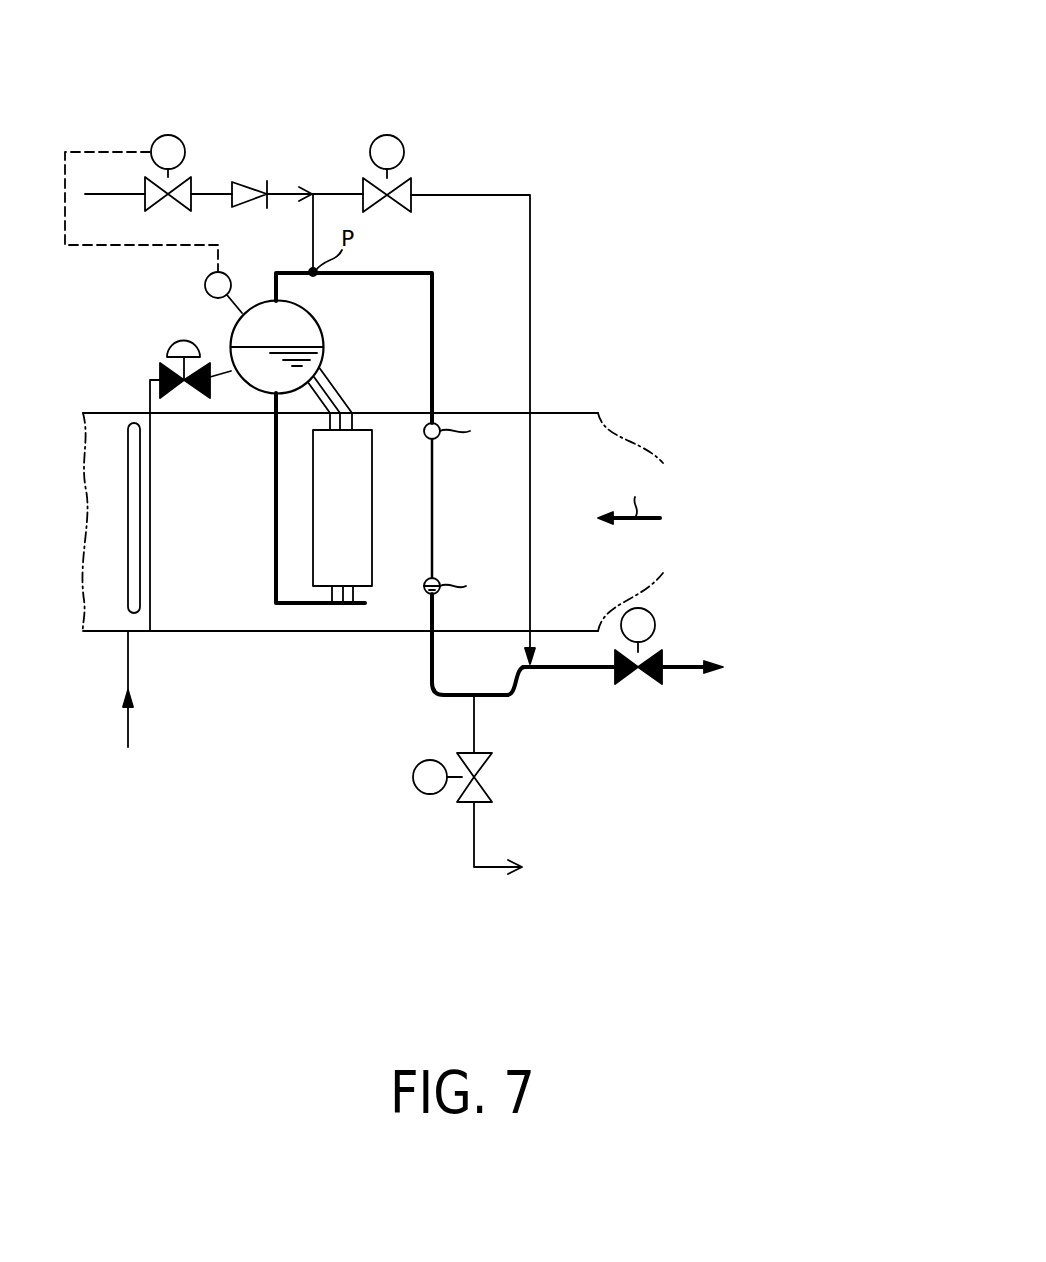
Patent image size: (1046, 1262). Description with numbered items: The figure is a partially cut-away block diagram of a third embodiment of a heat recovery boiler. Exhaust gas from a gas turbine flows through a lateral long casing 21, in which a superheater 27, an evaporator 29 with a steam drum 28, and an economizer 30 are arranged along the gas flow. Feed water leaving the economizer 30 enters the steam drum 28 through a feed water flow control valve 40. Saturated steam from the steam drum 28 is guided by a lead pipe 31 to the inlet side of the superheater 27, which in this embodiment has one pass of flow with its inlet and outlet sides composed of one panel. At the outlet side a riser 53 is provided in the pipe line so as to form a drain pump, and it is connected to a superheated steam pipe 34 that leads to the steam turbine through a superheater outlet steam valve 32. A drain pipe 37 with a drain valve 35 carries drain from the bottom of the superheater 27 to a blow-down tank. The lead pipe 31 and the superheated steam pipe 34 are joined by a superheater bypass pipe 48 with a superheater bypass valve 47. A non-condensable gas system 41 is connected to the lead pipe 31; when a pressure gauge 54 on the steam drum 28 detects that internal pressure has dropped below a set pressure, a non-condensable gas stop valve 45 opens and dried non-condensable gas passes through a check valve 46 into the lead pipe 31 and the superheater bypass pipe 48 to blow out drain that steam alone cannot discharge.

The casing 21 is at (245, 632).
The superheater 27 is at (433, 515).
The steam drum 28 is at (322, 325).
The evaporator 29 is at (372, 515).
The economizer 30 is at (141, 516).
The lead pipe 31 is at (413, 272).
The superheater outlet steam valve 32 is at (655, 620).
The superheated steam pipe 34 is at (680, 663).
The drain valve 35 is at (430, 795).
The drain pipe 37 is at (478, 872).
The feed water flow control valve 40 is at (167, 351).
The non-condensable gas system 41 is at (213, 63).
The non-condensable gas stop valve 45 is at (163, 135).
The check valve 46 is at (240, 181).
The superheater bypass valve 47 is at (387, 134).
The superheater bypass pipe 48 is at (475, 194).
The riser 53 is at (517, 681).
The pressure gauge 54 is at (205, 285).